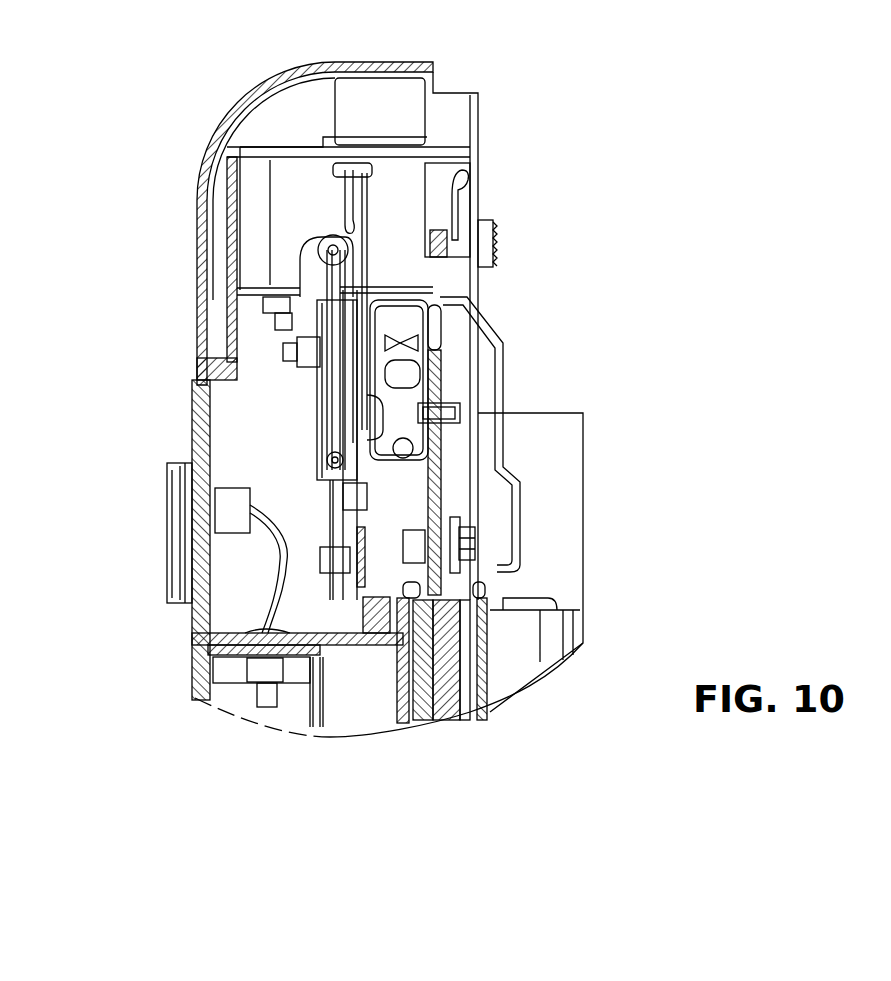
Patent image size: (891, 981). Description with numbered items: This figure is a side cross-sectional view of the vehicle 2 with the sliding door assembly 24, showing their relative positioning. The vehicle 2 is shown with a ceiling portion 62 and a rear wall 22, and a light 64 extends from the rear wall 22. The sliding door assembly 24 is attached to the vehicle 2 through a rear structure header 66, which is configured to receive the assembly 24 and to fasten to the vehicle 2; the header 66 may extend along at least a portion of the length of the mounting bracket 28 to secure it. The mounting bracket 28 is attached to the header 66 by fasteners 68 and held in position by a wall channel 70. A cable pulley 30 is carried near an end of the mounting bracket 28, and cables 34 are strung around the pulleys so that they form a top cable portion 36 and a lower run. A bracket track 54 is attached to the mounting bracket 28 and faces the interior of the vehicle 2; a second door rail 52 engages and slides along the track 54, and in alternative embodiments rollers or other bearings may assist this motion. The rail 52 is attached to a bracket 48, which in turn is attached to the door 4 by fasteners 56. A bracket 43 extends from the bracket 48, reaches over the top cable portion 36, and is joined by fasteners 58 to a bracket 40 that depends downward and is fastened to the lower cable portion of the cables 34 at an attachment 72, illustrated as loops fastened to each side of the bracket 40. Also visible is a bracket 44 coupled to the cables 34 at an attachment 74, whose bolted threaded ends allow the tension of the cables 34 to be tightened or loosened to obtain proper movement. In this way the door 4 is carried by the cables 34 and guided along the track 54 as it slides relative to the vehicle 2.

The vehicle 2 is at (181, 235).
The door 4 is at (497, 657).
The rear wall 22 is at (192, 639).
The sliding door assembly 24 is at (628, 548).
The mounting bracket 28 is at (347, 248).
The cable pulley 30 is at (350, 346).
The cables 34 is at (338, 386).
The top cable portion 36 is at (318, 233).
The bracket 40 is at (203, 321).
The bracket 43 is at (258, 292).
The bracket 44 is at (303, 250).
The bracket 48 is at (441, 369).
The second door rail 52 is at (412, 432).
The bracket track 54 is at (375, 300).
The fasteners 56 is at (472, 543).
The fasteners 58 is at (288, 332).
The ceiling portion 62 is at (233, 80).
The light 64 is at (163, 521).
The rear structure header 66 is at (333, 650).
The fasteners 68 is at (335, 563).
The wall channel 70 is at (377, 195).
The attachment 72 is at (329, 475).
The attachment 74 is at (367, 258).